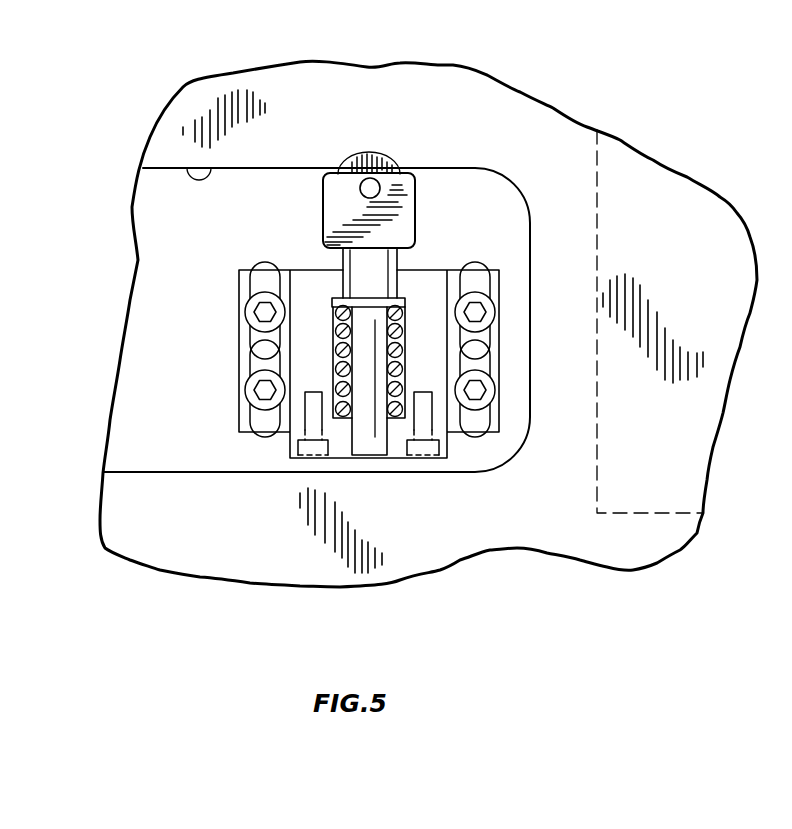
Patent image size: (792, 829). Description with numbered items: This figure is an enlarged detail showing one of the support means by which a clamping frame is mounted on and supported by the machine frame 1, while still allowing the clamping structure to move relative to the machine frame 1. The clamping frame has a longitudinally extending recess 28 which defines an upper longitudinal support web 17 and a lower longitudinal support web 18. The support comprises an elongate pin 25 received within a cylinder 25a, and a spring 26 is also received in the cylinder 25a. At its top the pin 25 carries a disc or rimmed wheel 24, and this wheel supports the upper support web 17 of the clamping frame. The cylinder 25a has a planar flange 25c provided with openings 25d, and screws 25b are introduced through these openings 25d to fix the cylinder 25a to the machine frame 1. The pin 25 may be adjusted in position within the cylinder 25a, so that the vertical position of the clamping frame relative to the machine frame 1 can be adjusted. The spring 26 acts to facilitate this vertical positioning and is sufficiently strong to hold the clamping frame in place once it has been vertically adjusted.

The machine frame 1 is at (169, 391).
The upper longitudinal support web 17 is at (317, 103).
The lower longitudinal support web 18 is at (307, 553).
The disc or rimmed wheel 24 is at (390, 152).
The elongate pin 25 is at (383, 275).
The cylinder 25a is at (311, 287).
The screws 25b is at (258, 393).
The planar flange 25c is at (288, 417).
The openings 25d is at (480, 417).
The spring 26 is at (333, 357).
The longitudinally extending recess 28 is at (211, 168).